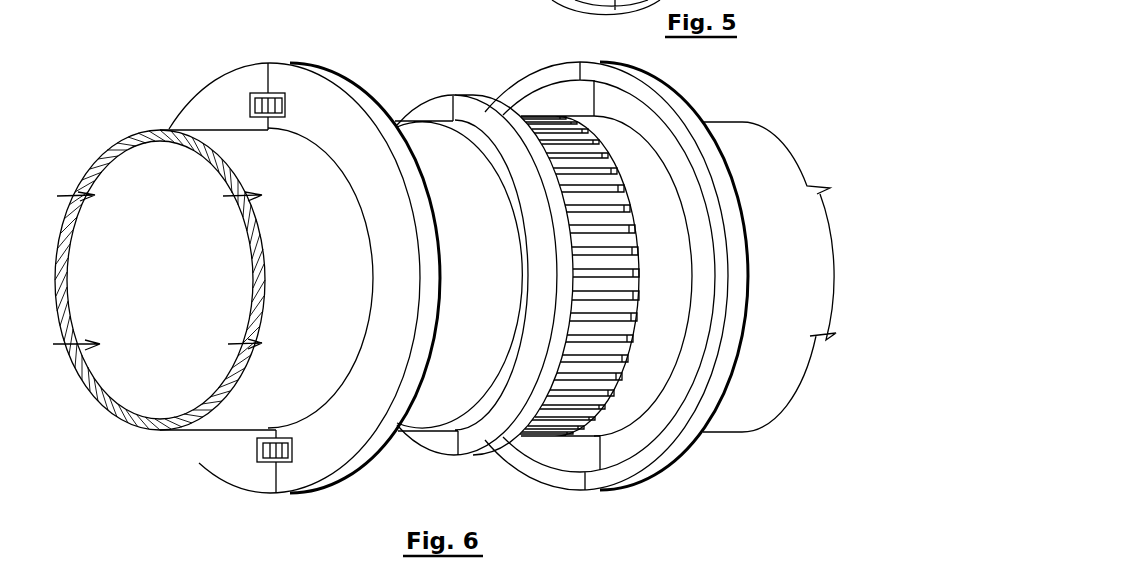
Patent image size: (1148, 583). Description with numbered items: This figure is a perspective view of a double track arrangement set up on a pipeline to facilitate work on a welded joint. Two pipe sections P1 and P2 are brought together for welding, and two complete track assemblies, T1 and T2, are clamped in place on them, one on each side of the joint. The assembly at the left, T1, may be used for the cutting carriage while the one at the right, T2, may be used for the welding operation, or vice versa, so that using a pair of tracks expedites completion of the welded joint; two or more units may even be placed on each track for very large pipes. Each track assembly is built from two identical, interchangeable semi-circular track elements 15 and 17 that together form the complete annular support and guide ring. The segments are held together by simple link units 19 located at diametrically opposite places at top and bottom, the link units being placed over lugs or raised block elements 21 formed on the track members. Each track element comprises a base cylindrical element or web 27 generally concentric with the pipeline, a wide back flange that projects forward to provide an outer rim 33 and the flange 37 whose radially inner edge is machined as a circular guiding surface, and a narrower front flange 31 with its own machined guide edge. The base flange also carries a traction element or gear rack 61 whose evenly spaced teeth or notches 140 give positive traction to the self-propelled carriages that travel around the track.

The track assembly T1 is at (314, 54).
The track assembly T2 is at (699, 95).
The track element 15 is at (329, 76).
The track element 17 is at (227, 72).
The link unit 19 is at (286, 106).
The raised block element 21 is at (281, 101).
The base cylindrical element 27 is at (684, 306).
The narrower flange 31 is at (509, 127).
The outer rim 33 is at (358, 92).
The flange 37 is at (613, 82).
The gear rack 61 is at (633, 232).
The teeth 140 is at (612, 218).
The pipe section P1 is at (518, 312).
The pipe section P2 is at (523, 331).